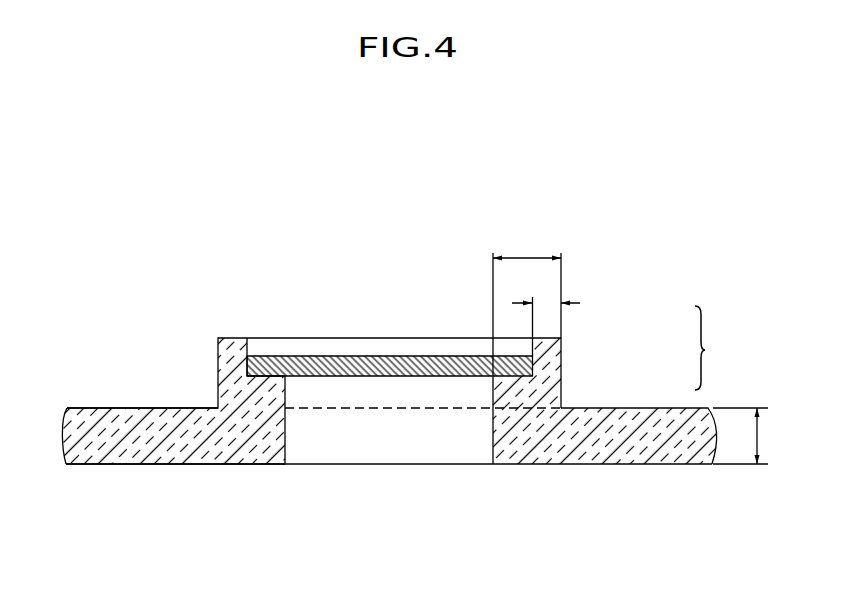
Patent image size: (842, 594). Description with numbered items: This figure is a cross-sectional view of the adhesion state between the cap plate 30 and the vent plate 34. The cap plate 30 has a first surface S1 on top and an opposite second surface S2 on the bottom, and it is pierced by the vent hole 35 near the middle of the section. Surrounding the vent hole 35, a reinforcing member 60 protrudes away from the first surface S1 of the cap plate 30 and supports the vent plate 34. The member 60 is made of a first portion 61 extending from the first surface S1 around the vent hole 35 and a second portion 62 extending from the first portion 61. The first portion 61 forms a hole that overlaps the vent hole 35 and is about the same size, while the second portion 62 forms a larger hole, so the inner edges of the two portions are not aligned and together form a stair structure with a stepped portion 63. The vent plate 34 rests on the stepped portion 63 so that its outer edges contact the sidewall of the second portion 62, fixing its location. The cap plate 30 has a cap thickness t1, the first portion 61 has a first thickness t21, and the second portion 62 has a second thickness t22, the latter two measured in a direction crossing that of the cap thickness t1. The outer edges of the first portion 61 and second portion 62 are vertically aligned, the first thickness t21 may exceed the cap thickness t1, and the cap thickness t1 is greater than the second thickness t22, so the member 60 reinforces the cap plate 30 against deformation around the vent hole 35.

The cap plate 30 is at (607, 466).
The vent plate 34 is at (347, 363).
The vent hole 35 is at (377, 467).
The member 60 is at (614, 358).
The first portion 61 is at (507, 395).
The second portion 62 is at (538, 350).
The stepped portion 63 is at (259, 370).
The first surface S1 is at (118, 395).
The second surface S2 is at (124, 477).
The cap thickness t1 is at (750, 436).
The first thickness t21 is at (527, 242).
The second thickness t22 is at (567, 293).